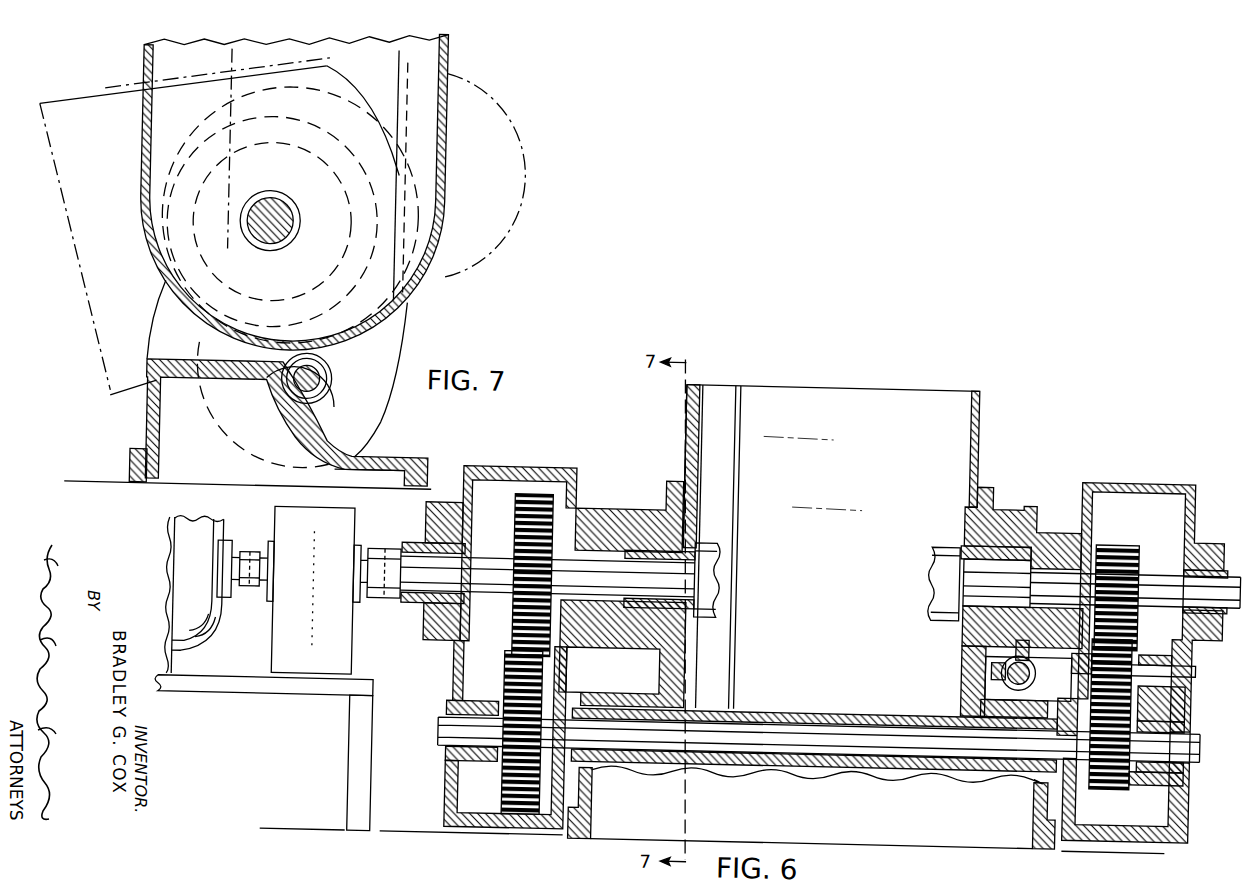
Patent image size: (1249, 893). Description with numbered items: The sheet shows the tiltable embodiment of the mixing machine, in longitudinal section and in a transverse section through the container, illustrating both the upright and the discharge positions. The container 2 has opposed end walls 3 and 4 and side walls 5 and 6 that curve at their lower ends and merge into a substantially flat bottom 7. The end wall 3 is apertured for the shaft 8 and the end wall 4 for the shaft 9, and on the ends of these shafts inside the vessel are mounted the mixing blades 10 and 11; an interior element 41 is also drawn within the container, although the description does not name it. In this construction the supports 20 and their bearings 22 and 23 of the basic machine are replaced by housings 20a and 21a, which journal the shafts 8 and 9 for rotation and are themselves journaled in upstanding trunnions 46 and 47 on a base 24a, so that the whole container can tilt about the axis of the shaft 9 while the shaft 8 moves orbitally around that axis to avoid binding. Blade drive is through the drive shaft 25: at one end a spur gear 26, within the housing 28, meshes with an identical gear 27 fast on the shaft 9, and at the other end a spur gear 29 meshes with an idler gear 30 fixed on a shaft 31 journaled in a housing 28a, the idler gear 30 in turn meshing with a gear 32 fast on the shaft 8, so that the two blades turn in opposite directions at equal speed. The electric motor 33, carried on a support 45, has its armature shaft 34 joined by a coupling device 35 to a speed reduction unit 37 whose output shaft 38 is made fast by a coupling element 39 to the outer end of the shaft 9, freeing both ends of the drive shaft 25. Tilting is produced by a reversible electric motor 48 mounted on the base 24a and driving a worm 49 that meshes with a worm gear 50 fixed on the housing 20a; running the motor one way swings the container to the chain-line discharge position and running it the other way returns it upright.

In FIG. 7, the container 2 is at (447, 116).
In FIG. 6, the container 2 is at (982, 385).
In FIG. 6, the end wall 3 is at (966, 428).
In FIG. 6, the end wall 4 is at (680, 428).
In FIG. 7, the side wall 5 is at (140, 123).
In FIG. 7, the side wall 6 is at (444, 183).
In FIG. 6, the side wall 6 is at (870, 383).
In FIG. 7, the bottom 7 is at (319, 337).
In FIG. 6, the bottom 7 is at (746, 708).
In FIG. 6, the shaft 8 is at (1097, 565).
In FIG. 7, the shaft 9 is at (290, 205).
In FIG. 6, the shaft 9 is at (480, 561).
In FIG. 6, the mixing blade 10 is at (944, 543).
In FIG. 6, the mixing blade 11 is at (708, 543).
In FIG. 6, the upright support 20 is at (1057, 524).
In FIG. 6, the housing 20a is at (1000, 502).
In FIG. 6, the housing 21a is at (626, 511).
In FIG. 6, the bearing 22 is at (967, 627).
In FIG. 6, the bearing 23 is at (690, 622).
In FIG. 7, the base 24a is at (135, 458).
In FIG. 6, the base 24a is at (568, 836).
In FIG. 7, the drive shaft 25 is at (335, 379).
In FIG. 6, the drive shaft 25 is at (795, 738).
In FIG. 6, the spur gear 26 is at (507, 792).
In FIG. 6, the gear 27 is at (512, 626).
In FIG. 7, the housing 28 is at (508, 184).
In FIG. 6, the housing 28 is at (454, 658).
In FIG. 6, the housing 28a is at (1192, 692).
In FIG. 6, the spur gear 29 is at (1130, 784).
In FIG. 6, the idler gear 30 is at (1142, 696).
In FIG. 6, the shaft 31 is at (1196, 662).
In FIG. 6, the gear 32 is at (1142, 565).
In FIG. 6, the electric motor 33 is at (195, 653).
In FIG. 6, the armature shaft 34 is at (229, 607).
In FIG. 6, the coupling device 35 is at (249, 562).
In FIG. 6, the speed reduction unit 37 is at (274, 532).
In FIG. 6, the output shaft 38 is at (363, 553).
In FIG. 6, the coupling element 39 is at (387, 605).
In FIG. 7, the partition plate 41 is at (408, 89).
In FIG. 6, the partition plate 41 is at (738, 470).
In FIG. 6, the support 45 is at (351, 783).
In FIG. 6, the trunnion 46 is at (980, 694).
In FIG. 7, the trunnion 47 is at (162, 306).
In FIG. 6, the trunnion 47 is at (650, 672).
In FIG. 6, the reversible electric motor 48 is at (1043, 688).
In FIG. 6, the worm 49 is at (1000, 648).
In FIG. 6, the worm gear 50 is at (1040, 652).